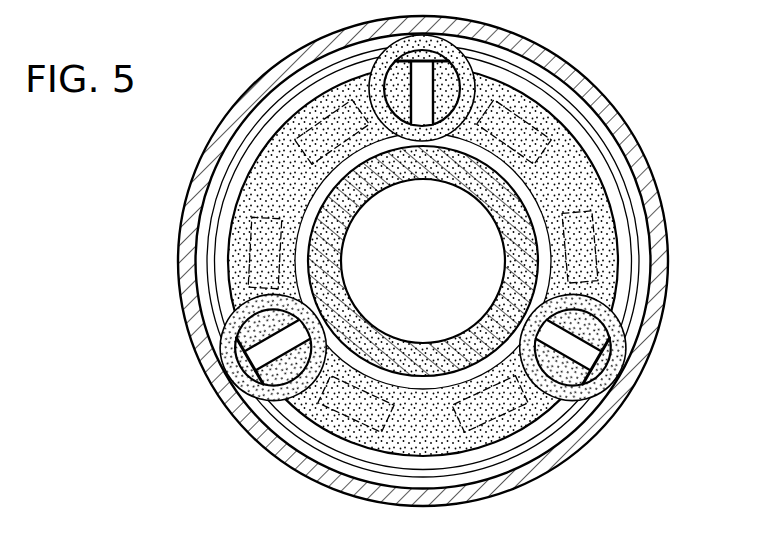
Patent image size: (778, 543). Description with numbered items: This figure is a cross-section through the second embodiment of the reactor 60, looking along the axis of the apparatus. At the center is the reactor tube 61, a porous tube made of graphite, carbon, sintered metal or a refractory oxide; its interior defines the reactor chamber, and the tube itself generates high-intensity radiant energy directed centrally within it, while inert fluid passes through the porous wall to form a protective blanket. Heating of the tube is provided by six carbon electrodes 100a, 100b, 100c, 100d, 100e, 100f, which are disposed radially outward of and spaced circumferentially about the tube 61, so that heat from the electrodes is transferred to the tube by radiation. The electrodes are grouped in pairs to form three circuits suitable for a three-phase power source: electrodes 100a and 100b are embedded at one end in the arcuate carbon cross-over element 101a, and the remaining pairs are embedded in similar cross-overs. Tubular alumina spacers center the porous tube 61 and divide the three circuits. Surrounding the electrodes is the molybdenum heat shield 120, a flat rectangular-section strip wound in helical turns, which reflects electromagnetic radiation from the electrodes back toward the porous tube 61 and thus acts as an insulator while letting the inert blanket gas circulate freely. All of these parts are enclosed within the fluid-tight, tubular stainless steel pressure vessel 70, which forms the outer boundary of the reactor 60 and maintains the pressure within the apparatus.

The reactor 60 is at (624, 421).
The reactor tube 61 is at (318, 277).
The pressure vessel 70 is at (250, 427).
The heat shield 120 is at (641, 283).
The cross-over element 101a is at (345, 428).
The carbon electrode 100a is at (381, 414).
The carbon electrode 100b is at (545, 467).
The carbon electrode 100c is at (597, 250).
The carbon electrode 100d is at (528, 148).
The carbon electrode 100e is at (312, 102).
The carbon electrode 100f is at (238, 259).